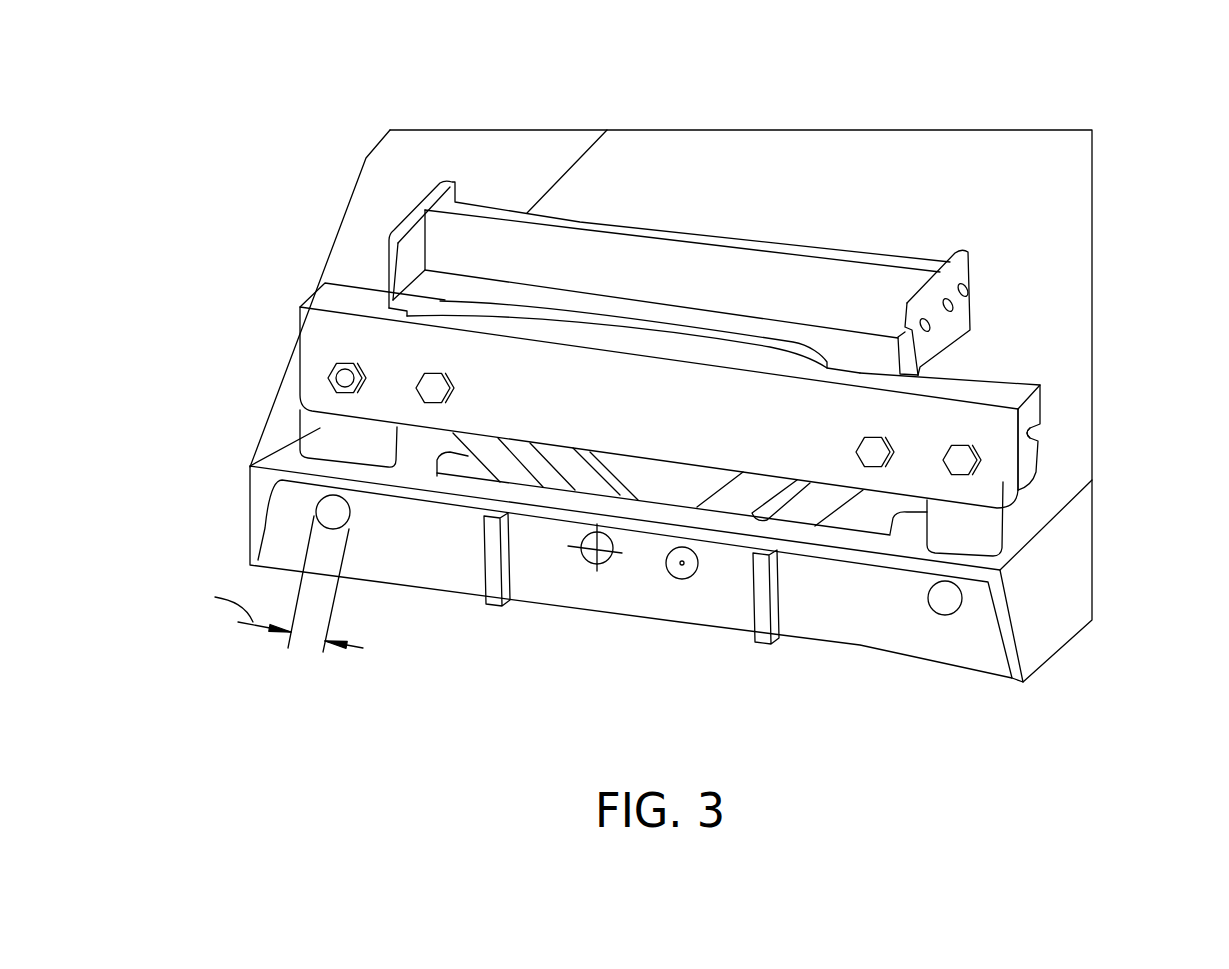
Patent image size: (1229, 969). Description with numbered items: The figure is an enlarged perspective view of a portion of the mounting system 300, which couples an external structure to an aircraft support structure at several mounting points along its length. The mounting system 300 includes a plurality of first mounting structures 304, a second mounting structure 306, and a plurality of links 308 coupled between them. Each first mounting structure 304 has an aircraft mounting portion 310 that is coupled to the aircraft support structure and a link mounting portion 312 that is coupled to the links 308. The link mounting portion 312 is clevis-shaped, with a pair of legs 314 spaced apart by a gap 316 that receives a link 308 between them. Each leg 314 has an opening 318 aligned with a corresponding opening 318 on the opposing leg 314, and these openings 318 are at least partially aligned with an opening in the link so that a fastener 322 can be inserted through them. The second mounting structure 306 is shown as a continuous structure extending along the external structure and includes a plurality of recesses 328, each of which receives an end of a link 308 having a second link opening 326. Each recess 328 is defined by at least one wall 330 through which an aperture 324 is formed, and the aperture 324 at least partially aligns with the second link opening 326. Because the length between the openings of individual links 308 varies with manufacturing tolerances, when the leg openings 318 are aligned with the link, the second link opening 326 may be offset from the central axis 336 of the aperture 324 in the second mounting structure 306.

The mounting system 300 is at (280, 140).
The first mounting structure 304 is at (352, 298).
The second mounting structure 306 is at (1090, 599).
The link 308 is at (348, 440).
The aircraft mounting portion 310 is at (484, 228).
The link mounting portion 312 is at (1003, 386).
The leg 314 is at (1036, 418).
The gap 316 is at (1032, 433).
The opening 318 is at (347, 362).
The fastener 322 is at (345, 375).
The aperture 324 is at (600, 563).
The second link opening 326 is at (682, 565).
The recess 328 is at (467, 465).
The wall 330 is at (394, 555).
The central axis 336 is at (575, 548).